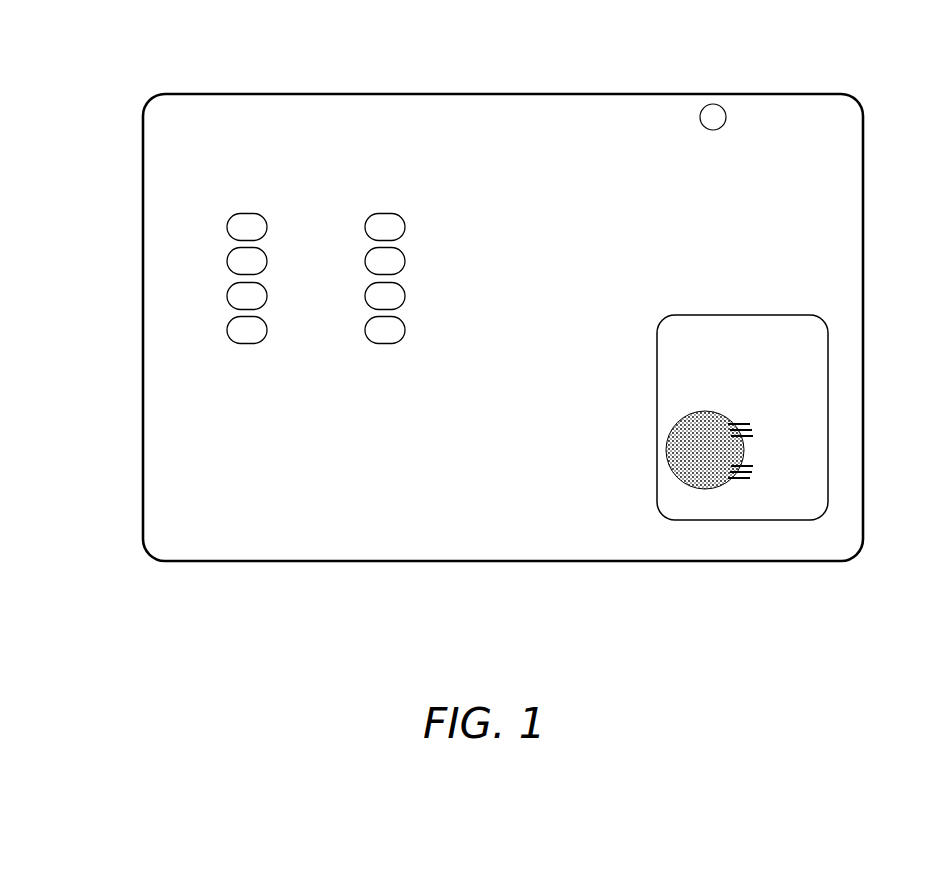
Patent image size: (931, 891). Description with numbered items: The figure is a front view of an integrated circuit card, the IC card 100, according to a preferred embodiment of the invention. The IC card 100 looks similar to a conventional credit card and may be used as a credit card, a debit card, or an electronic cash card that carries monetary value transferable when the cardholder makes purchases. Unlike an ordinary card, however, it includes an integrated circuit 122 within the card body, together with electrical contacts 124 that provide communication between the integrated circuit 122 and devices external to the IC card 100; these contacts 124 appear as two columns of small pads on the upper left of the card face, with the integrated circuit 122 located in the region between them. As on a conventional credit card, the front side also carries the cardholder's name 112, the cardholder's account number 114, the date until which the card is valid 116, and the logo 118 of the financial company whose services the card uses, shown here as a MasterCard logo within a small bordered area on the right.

The IC card 100 is at (502, 93).
The cardholder's name 112 is at (190, 523).
The cardholder's account number 114 is at (167, 392).
The date until which the card is valid 116 is at (415, 433).
The logo 118 is at (777, 493).
The integrated circuit 122 is at (250, 174).
The electrical contacts 124 is at (249, 279).